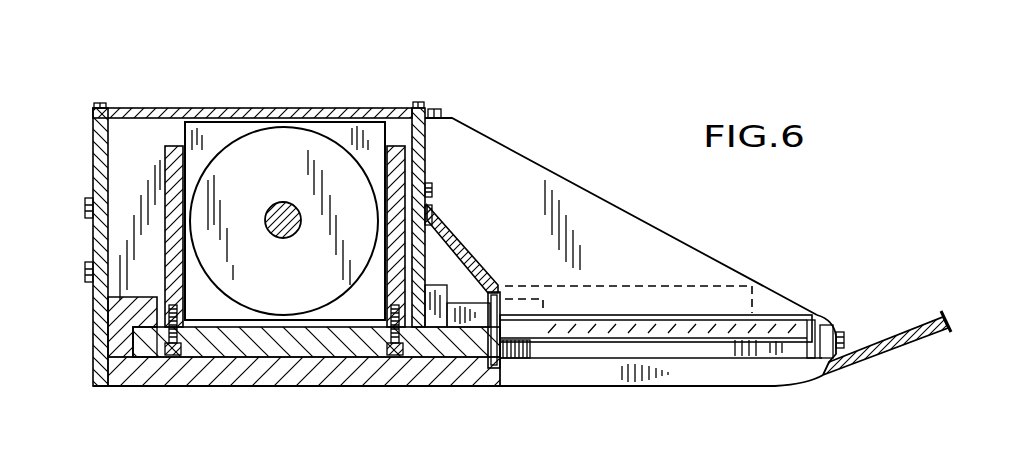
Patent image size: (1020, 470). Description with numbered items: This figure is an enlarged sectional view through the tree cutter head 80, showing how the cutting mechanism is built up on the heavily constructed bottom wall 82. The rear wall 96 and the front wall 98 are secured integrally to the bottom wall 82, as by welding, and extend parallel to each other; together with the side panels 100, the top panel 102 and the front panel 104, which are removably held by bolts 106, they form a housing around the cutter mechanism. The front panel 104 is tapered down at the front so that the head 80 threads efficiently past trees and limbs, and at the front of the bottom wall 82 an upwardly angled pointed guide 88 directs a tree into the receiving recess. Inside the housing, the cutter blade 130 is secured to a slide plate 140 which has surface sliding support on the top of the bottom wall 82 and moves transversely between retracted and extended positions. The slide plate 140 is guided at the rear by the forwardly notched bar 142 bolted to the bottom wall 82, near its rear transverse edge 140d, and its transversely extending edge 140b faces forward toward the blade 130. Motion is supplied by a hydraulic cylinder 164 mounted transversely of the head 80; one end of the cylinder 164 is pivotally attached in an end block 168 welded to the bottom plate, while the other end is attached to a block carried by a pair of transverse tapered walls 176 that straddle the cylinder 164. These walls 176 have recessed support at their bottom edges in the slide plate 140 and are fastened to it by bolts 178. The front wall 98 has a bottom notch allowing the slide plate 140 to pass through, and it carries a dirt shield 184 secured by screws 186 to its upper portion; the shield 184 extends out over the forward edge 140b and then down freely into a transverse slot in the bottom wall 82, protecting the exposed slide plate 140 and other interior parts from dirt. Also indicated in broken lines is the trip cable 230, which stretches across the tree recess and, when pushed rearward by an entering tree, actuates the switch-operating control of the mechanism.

The tree cutter head 80 is at (640, 198).
The bottom wall 82 is at (331, 387).
The pointed guide 88 is at (918, 325).
The rear wall 96 is at (93, 322).
The front wall 98 is at (425, 172).
The side panel 100 is at (578, 195).
The top panel 102 is at (281, 108).
The front panel 104 is at (518, 150).
The bolt 106 is at (100, 104).
The cutter blade 130 is at (737, 338).
The slide plate 140 is at (278, 357).
The transversely extending edge 140b is at (496, 345).
The rear transverse edge 140d is at (135, 347).
The forwardly notched bar 142 is at (112, 309).
The hydraulic cylinder 164 is at (230, 140).
The end block 168 is at (364, 130).
The transverse tapered wall 176 is at (165, 165).
The bolt 178 is at (173, 357).
The dirt shield 184 is at (474, 268).
The screw 186 is at (432, 190).
The trip cable 230 is at (593, 277).